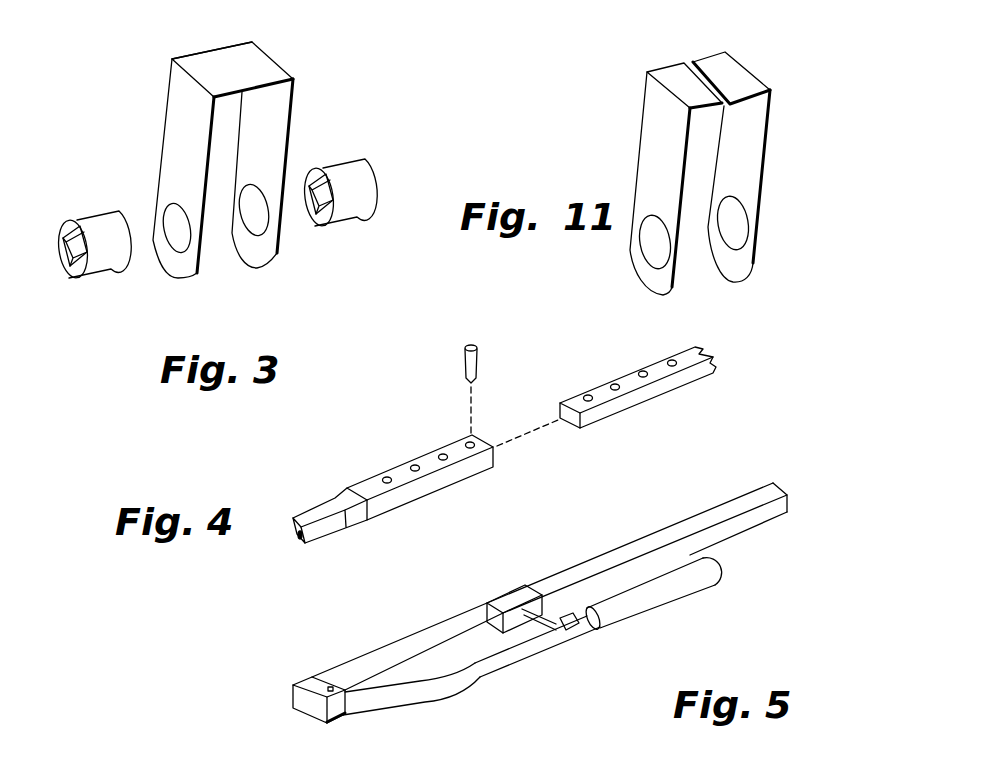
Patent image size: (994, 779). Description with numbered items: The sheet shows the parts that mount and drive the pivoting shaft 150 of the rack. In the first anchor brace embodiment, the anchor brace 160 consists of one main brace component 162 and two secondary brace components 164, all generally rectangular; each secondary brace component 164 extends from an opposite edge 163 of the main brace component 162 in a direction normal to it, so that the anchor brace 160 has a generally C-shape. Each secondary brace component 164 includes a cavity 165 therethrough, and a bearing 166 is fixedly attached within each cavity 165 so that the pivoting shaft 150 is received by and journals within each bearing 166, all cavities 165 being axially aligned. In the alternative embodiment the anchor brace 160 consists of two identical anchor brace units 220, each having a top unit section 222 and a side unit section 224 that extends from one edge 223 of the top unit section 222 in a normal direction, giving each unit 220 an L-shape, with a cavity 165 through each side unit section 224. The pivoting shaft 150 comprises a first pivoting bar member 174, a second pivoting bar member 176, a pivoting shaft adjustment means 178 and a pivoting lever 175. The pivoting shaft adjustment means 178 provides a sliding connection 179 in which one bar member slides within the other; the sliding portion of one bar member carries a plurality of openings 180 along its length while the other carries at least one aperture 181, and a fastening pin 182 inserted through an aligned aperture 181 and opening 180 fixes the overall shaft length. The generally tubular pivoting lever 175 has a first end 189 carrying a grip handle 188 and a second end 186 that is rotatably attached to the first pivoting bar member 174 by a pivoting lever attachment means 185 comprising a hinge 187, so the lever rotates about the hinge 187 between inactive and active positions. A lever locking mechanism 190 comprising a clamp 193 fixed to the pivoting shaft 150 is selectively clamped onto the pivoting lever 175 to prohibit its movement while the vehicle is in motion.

In FIG. 4, the pivoting shaft 150 is at (589, 457).
In FIG. 3, the anchor brace 160 is at (336, 95).
In FIG. 11, the anchor brace 160 is at (607, 62).
In FIG. 3, the main brace component 162 is at (213, 55).
In FIG. 3, the edge 163 is at (270, 57).
In FIG. 3, the secondary brace component 164 is at (278, 128).
In FIG. 3, the cavity 165 is at (183, 253).
In FIG. 11, the cavity 165 is at (750, 228).
In FIG. 3, the bearing 166 is at (98, 273).
In FIG. 4, the first pivoting bar member 174 is at (682, 350).
In FIG. 5, the pivoting lever 175 is at (481, 683).
In FIG. 4, the second pivoting bar member 176 is at (437, 493).
In FIG. 4, the pivoting shaft adjustment means 178 is at (626, 438).
In FIG. 4, the sliding connection 179 is at (538, 487).
In FIG. 4, the openings 180 is at (443, 454).
In FIG. 4, the aperture 181 is at (641, 372).
In FIG. 4, the fastening pin 182 is at (504, 333).
In FIG. 5, the pivoting lever attachment means 185 is at (287, 656).
In FIG. 5, the second end 186 is at (352, 702).
In FIG. 5, the hinge 187 is at (307, 715).
In FIG. 5, the grip handle 188 is at (658, 608).
In FIG. 5, the first end 189 is at (722, 568).
In FIG. 5, the lever locking mechanism 190 is at (479, 570).
In FIG. 5, the clamp 193 is at (575, 644).
In FIG. 11, the anchor brace unit 220 is at (624, 145).
In FIG. 11, the top unit section 222 is at (675, 75).
In FIG. 11, the edge 223 is at (738, 75).
In FIG. 11, the side unit section 224 is at (638, 165).